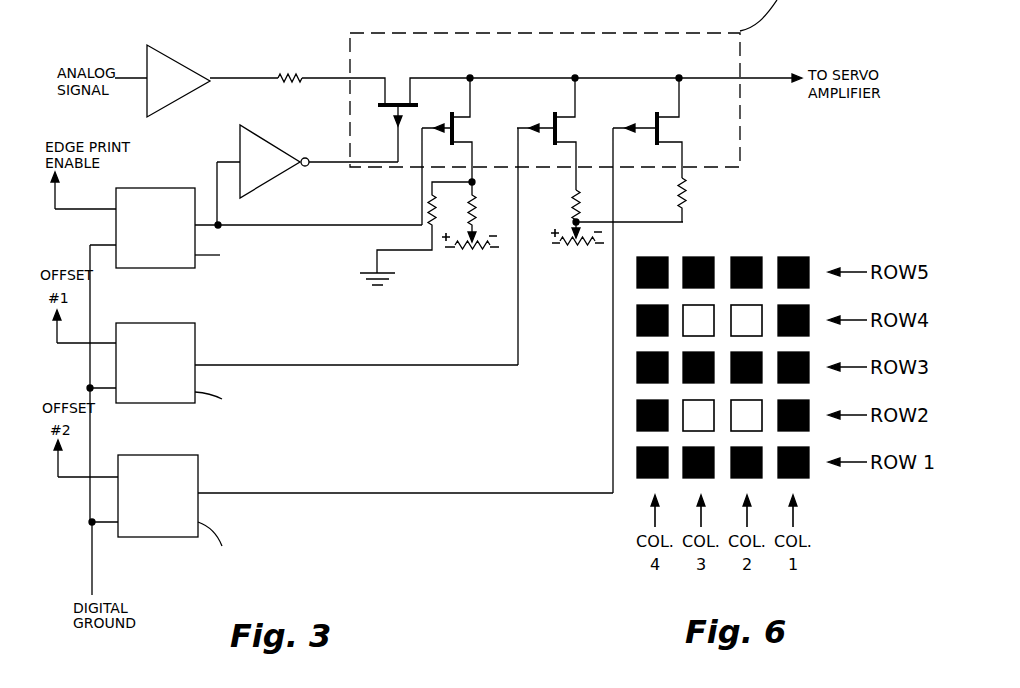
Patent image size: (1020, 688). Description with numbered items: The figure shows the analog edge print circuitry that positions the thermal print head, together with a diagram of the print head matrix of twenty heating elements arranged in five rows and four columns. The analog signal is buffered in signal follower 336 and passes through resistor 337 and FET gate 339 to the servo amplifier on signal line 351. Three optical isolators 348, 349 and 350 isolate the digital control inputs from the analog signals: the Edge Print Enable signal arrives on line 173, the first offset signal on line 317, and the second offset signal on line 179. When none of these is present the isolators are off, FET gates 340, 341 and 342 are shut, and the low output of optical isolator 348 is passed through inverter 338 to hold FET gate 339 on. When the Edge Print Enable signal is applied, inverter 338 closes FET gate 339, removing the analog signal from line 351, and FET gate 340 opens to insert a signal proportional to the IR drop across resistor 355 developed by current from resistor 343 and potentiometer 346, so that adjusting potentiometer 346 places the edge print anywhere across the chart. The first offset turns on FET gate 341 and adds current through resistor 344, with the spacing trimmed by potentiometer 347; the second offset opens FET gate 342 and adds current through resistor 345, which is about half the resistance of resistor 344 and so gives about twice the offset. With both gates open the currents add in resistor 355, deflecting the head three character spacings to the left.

The edge print enable line 173 is at (97, 208).
The offset No. 1 line 317 is at (97, 343).
The offset No. 2 line 179 is at (98, 477).
The signal follower 336 is at (186, 70).
The resistor 337 is at (292, 72).
The inverter 338 is at (272, 146).
The FET gate 339 is at (400, 76).
The FET gate 340 is at (456, 151).
The FET gate 341 is at (555, 221).
The FET gate 342 is at (653, 285).
The resistor 343 is at (492, 199).
The resistor 344 is at (574, 211).
The resistor 345 is at (681, 197).
The potentiometer 346 is at (478, 258).
The potentiometer 347 is at (583, 250).
The optical isolator 348 is at (225, 257).
The optical isolator 349 is at (226, 401).
The optical isolator 350 is at (226, 544).
The signal line to servo amplifier 351 is at (762, 75).
The resistor 355 is at (430, 227).